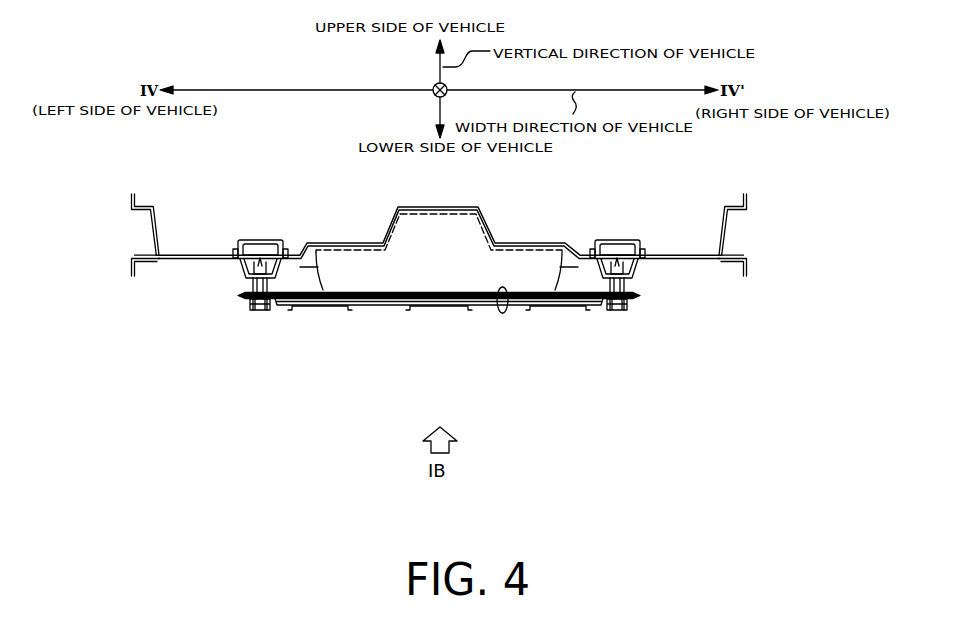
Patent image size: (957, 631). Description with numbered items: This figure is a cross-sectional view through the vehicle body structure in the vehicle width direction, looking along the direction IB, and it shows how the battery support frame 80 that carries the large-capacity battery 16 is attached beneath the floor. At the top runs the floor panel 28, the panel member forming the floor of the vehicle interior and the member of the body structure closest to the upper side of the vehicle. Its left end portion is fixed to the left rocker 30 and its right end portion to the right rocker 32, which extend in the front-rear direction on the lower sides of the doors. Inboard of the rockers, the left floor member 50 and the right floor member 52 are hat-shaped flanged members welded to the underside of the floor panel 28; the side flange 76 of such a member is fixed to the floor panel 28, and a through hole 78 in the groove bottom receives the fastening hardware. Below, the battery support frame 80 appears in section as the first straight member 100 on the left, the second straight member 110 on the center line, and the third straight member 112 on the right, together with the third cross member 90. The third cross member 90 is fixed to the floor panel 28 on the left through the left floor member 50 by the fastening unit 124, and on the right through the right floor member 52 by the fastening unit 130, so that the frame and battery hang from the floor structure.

The large-capacity battery 16 is at (528, 243).
The floor panel 28 is at (353, 243).
The left rocker 30 is at (128, 235).
The right rocker 32 is at (749, 235).
The left floor member 50 is at (243, 266).
The right floor member 52 is at (636, 268).
The side flange 76 is at (262, 239).
The through hole 78 is at (618, 240).
The battery support frame 80 is at (590, 355).
The third cross member 90 is at (503, 313).
The first straight member 100 is at (330, 309).
The second straight member 110 is at (443, 310).
The third straight member 112 is at (550, 309).
The fastening unit 124 is at (243, 288).
The fastening unit 130 is at (635, 288).